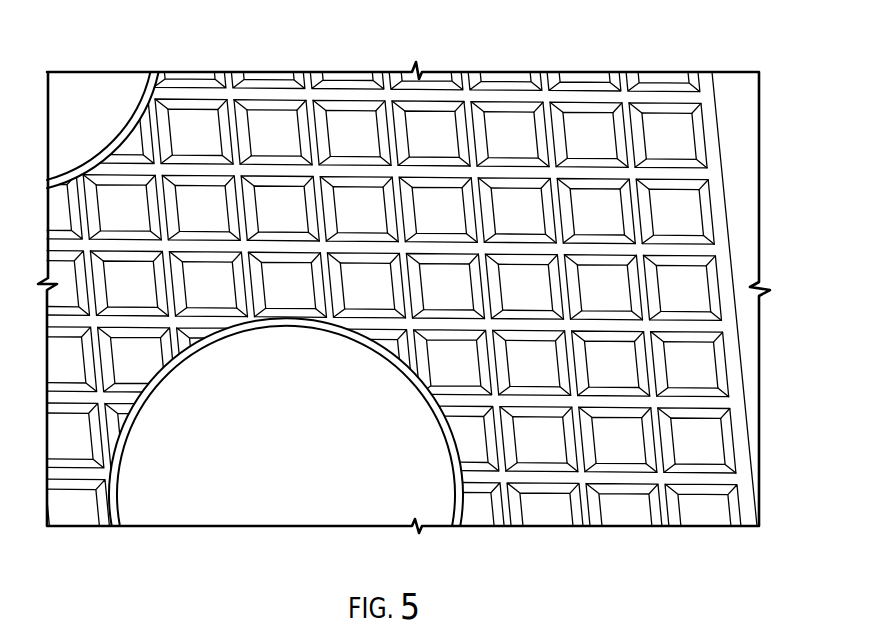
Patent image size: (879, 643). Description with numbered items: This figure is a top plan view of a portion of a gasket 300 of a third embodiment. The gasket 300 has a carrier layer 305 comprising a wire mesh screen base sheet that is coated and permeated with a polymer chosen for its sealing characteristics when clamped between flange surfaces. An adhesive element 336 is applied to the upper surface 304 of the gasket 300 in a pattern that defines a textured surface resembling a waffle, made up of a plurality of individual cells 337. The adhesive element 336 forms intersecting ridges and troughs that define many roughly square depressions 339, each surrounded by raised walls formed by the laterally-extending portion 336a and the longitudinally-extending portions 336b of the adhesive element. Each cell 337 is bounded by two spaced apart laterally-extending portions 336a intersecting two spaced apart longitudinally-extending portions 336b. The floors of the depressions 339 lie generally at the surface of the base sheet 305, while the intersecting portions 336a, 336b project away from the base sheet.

The gasket 300 is at (684, 70).
The upper surface 304 is at (435, 306).
The carrier layer 305 is at (670, 224).
The adhesive element 336 is at (463, 123).
The laterally-extending portion of the adhesive element 336a is at (718, 400).
The longitudinally-extending portion of the adhesive element 336b is at (509, 515).
The cell 337 is at (597, 492).
The depression 339 is at (691, 457).